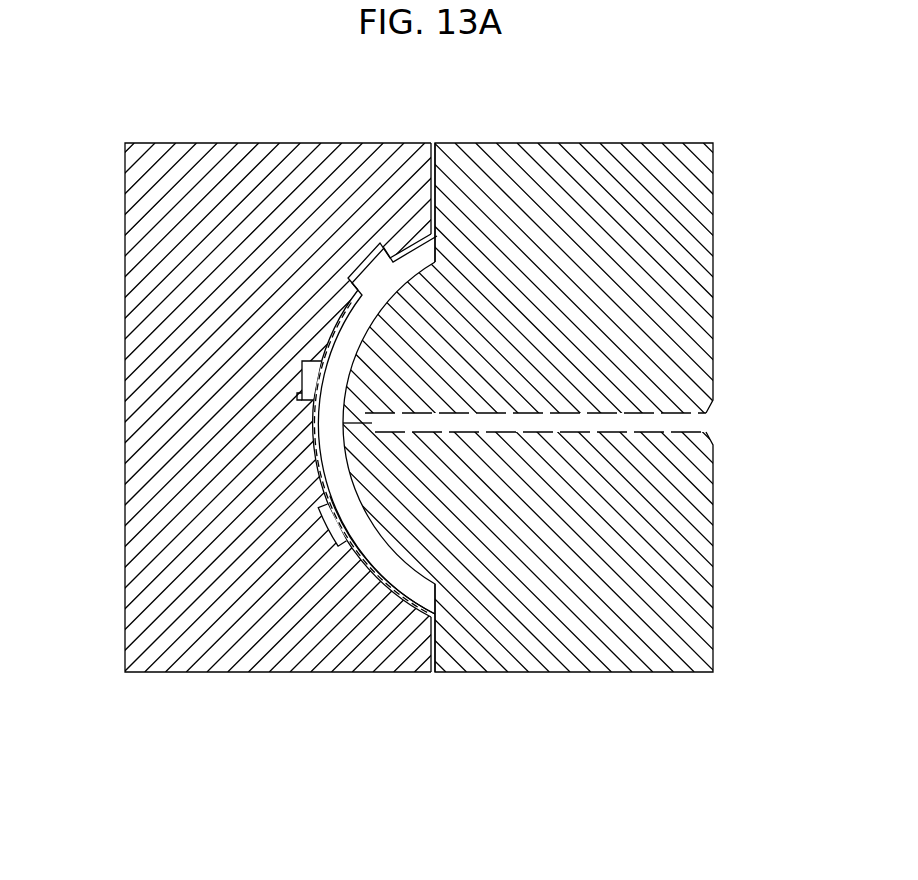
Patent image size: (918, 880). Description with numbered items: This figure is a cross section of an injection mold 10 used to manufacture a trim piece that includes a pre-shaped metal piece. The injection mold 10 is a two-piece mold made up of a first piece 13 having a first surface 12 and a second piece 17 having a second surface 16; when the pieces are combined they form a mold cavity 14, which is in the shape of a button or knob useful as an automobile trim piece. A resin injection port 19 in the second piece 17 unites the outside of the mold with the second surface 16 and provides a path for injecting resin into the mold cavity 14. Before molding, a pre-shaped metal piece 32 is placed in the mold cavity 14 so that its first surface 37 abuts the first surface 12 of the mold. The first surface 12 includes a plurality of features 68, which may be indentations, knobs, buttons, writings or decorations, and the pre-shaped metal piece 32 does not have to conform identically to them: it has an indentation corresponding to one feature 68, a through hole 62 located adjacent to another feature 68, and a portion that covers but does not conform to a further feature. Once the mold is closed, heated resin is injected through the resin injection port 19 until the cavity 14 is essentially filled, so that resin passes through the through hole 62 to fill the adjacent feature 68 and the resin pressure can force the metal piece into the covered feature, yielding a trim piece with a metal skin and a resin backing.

The first piece 13 is at (262, 143).
The second piece 17 is at (620, 143).
The injection mold 10 is at (716, 600).
The resin injection port 19 is at (705, 422).
The second surface 16 is at (434, 268).
The first surface of pre-shaped metal piece 37 is at (416, 237).
The pre-shaped metal piece 32 is at (417, 600).
The first surface 12 is at (312, 452).
The mold cavity 14 is at (386, 562).
The feature 68 is at (302, 362).
The through hole 62 is at (297, 400).